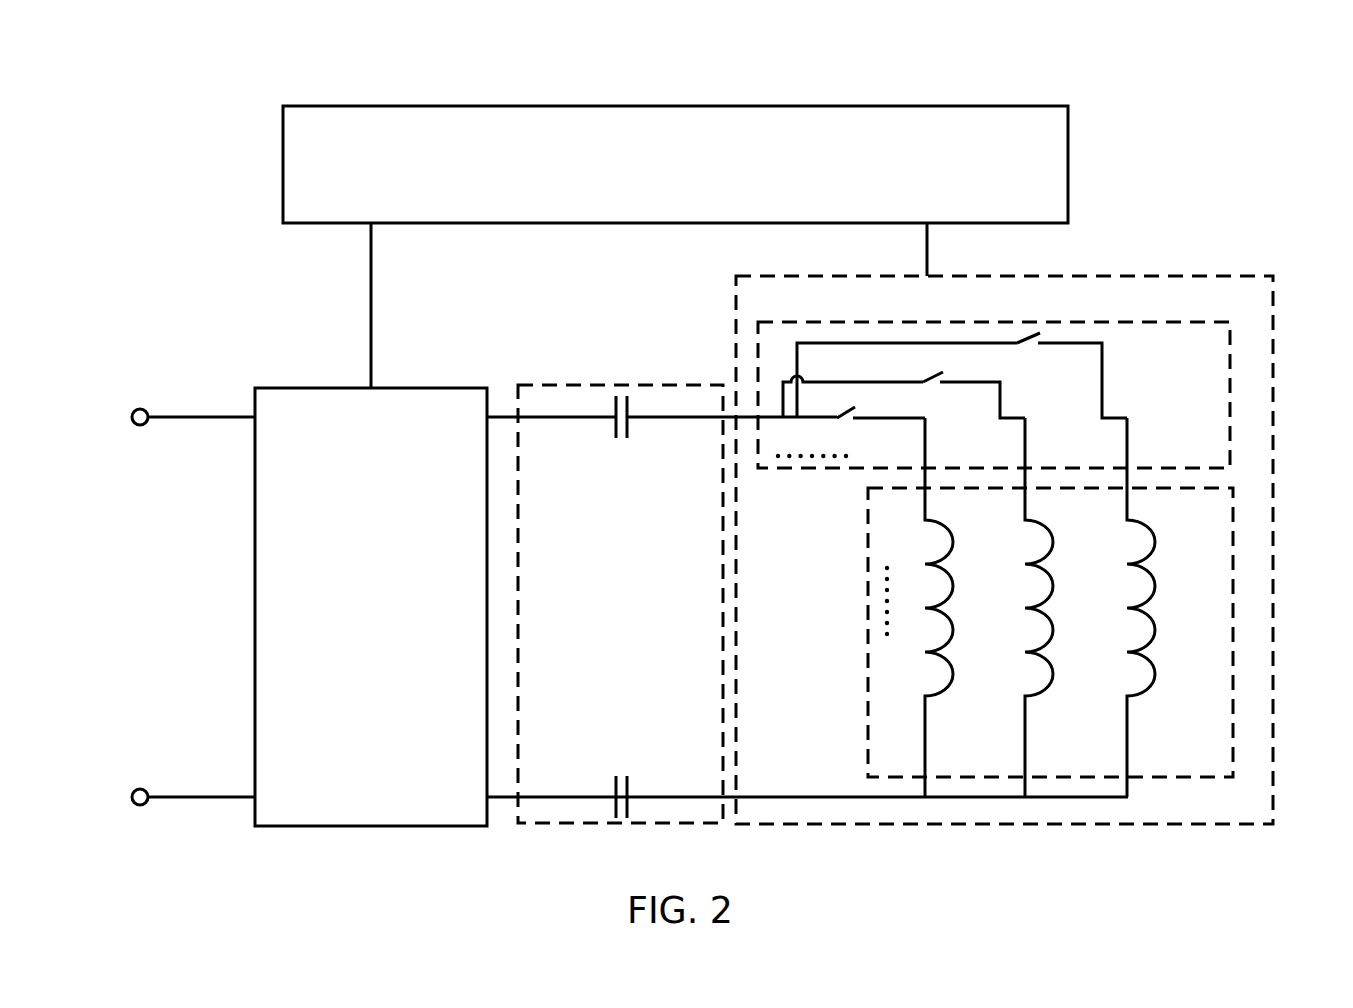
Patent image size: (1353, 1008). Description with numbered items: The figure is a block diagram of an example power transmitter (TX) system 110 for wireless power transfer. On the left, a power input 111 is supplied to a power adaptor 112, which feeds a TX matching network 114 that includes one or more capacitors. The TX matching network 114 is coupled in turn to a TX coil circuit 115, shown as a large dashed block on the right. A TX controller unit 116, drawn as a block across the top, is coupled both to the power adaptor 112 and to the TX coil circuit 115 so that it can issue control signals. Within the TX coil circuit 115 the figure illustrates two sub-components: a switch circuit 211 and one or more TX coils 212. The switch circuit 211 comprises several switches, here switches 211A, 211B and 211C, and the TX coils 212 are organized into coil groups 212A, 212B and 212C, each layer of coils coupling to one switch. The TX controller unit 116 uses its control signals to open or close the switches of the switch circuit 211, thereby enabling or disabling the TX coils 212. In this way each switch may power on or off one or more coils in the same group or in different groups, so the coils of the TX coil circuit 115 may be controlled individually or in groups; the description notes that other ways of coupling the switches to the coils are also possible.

The power transmitter (TX) system 110 is at (700, 451).
The power input 111 is at (175, 607).
The power adaptor 112 is at (371, 607).
The TX matching network 114 is at (620, 604).
The TX coil circuit 115 is at (1004, 550).
The TX controller unit 116 is at (675, 247).
The switch circuit 211 is at (994, 395).
The switch 211A is at (962, 375).
The switch 211B is at (904, 395).
The switch 211C is at (881, 428).
The TX coils 212 is at (998, 764).
The coil group 212A is at (1163, 607).
The coil group 212B is at (1060, 607).
The coil group 212C is at (957, 607).